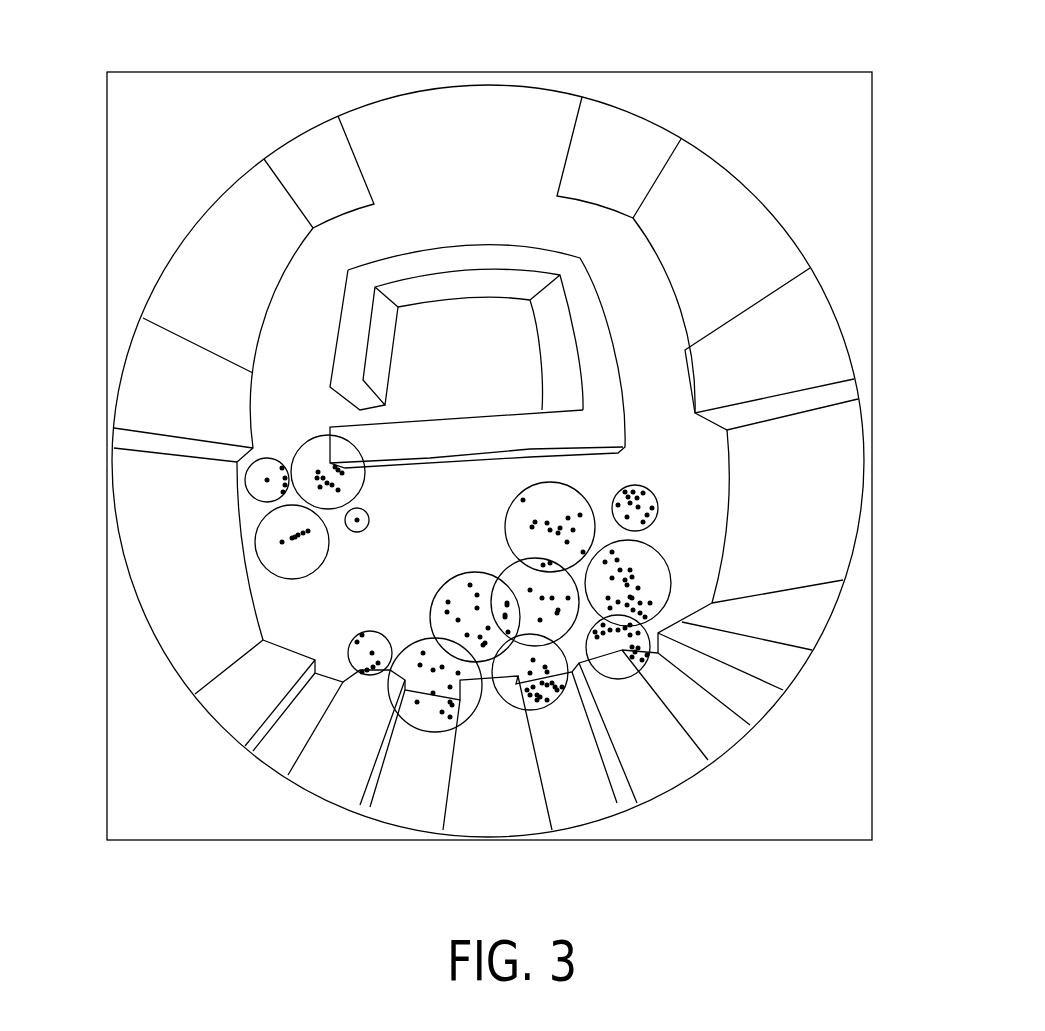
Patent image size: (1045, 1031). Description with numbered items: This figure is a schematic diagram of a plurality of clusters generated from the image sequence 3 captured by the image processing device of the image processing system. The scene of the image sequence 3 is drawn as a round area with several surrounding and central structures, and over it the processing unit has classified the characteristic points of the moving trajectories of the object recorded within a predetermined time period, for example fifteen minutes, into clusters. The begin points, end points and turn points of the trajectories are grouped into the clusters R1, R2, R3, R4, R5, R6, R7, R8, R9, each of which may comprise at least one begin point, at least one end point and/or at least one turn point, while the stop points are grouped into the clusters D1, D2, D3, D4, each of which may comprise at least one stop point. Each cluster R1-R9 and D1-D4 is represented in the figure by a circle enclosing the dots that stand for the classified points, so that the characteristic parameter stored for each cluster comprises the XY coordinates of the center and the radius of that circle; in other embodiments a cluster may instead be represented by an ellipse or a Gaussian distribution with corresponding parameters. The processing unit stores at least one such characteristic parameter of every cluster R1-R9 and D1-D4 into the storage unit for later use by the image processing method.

The image sequence 3 is at (772, 77).
The cluster D1 is at (247, 490).
The cluster D2 is at (369, 517).
The cluster D3 is at (657, 502).
The cluster D4 is at (347, 652).
The cluster R1 is at (305, 440).
The cluster R2 is at (255, 542).
The cluster R3 is at (590, 507).
The cluster R4 is at (438, 591).
The cluster R5 is at (508, 566).
The cluster R6 is at (663, 560).
The cluster R7 is at (620, 680).
The cluster R8 is at (535, 705).
The cluster R9 is at (430, 732).